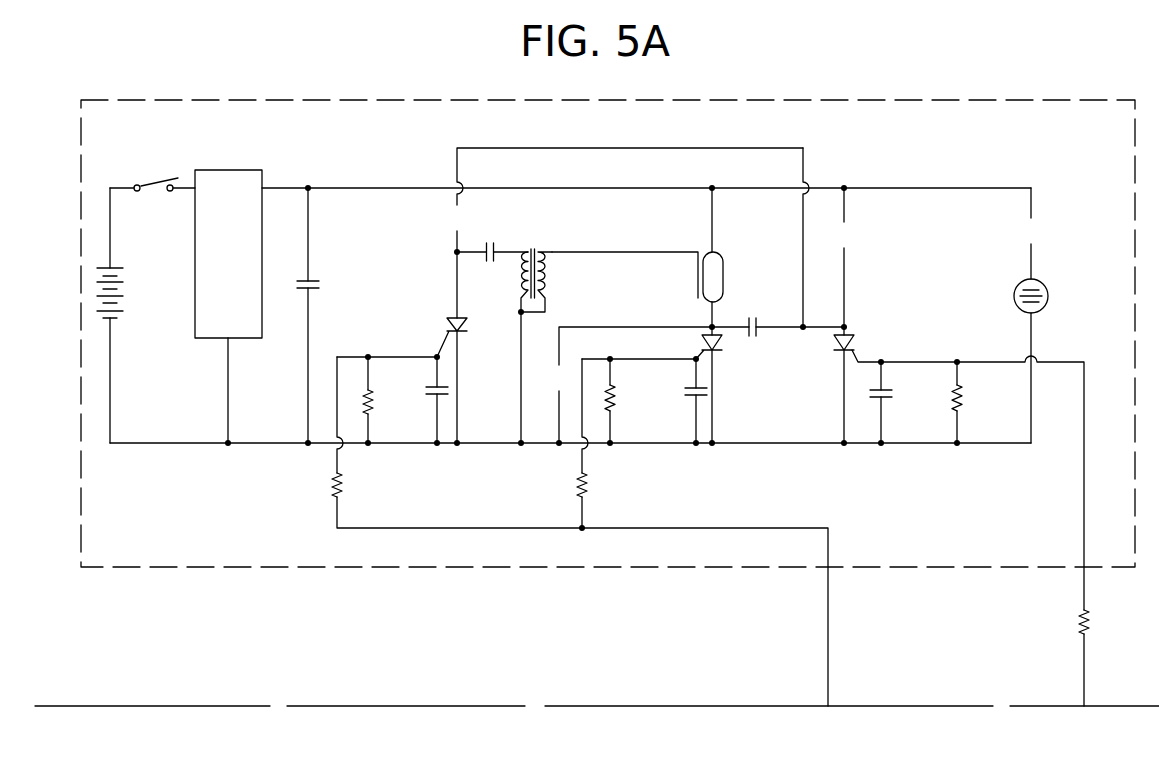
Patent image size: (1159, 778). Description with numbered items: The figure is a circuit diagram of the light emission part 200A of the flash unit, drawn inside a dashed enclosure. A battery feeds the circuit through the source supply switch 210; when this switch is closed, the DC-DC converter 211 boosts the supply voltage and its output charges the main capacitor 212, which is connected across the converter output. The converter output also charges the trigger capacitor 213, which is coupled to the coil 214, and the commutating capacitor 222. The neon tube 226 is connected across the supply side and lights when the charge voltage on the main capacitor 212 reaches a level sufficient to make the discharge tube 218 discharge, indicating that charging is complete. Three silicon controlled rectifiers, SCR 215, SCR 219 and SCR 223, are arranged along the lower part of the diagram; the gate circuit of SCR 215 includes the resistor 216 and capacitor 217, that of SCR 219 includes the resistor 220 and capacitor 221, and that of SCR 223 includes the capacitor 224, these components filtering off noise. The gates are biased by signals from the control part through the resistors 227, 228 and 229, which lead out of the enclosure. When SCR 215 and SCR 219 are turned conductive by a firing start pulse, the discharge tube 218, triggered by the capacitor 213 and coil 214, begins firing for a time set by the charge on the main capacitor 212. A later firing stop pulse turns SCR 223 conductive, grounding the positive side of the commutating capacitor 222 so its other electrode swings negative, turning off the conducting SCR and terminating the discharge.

The light emission part 200A is at (1018, 112).
The source supply switch 210 is at (160, 184).
The DC-DC converter 211 is at (230, 170).
The main capacitor 212 is at (320, 285).
The trigger capacitor 213 is at (492, 240).
The coil 214 is at (535, 248).
The SCR 215 is at (446, 324).
The resistor 216 is at (372, 400).
The capacitor 217 is at (426, 390).
The discharge tube 218 is at (723, 273).
The SCR 219 is at (720, 340).
The resistor 220 is at (615, 398).
The capacitor 221 is at (686, 391).
The commutating capacitor 222 is at (755, 338).
The SCR 223 is at (854, 344).
The capacitor 224 is at (892, 396).
The neon tube 226 is at (1013, 296).
The resistor 227 is at (344, 483).
The resistor 228 is at (589, 483).
The resistor 229 is at (1078, 624).